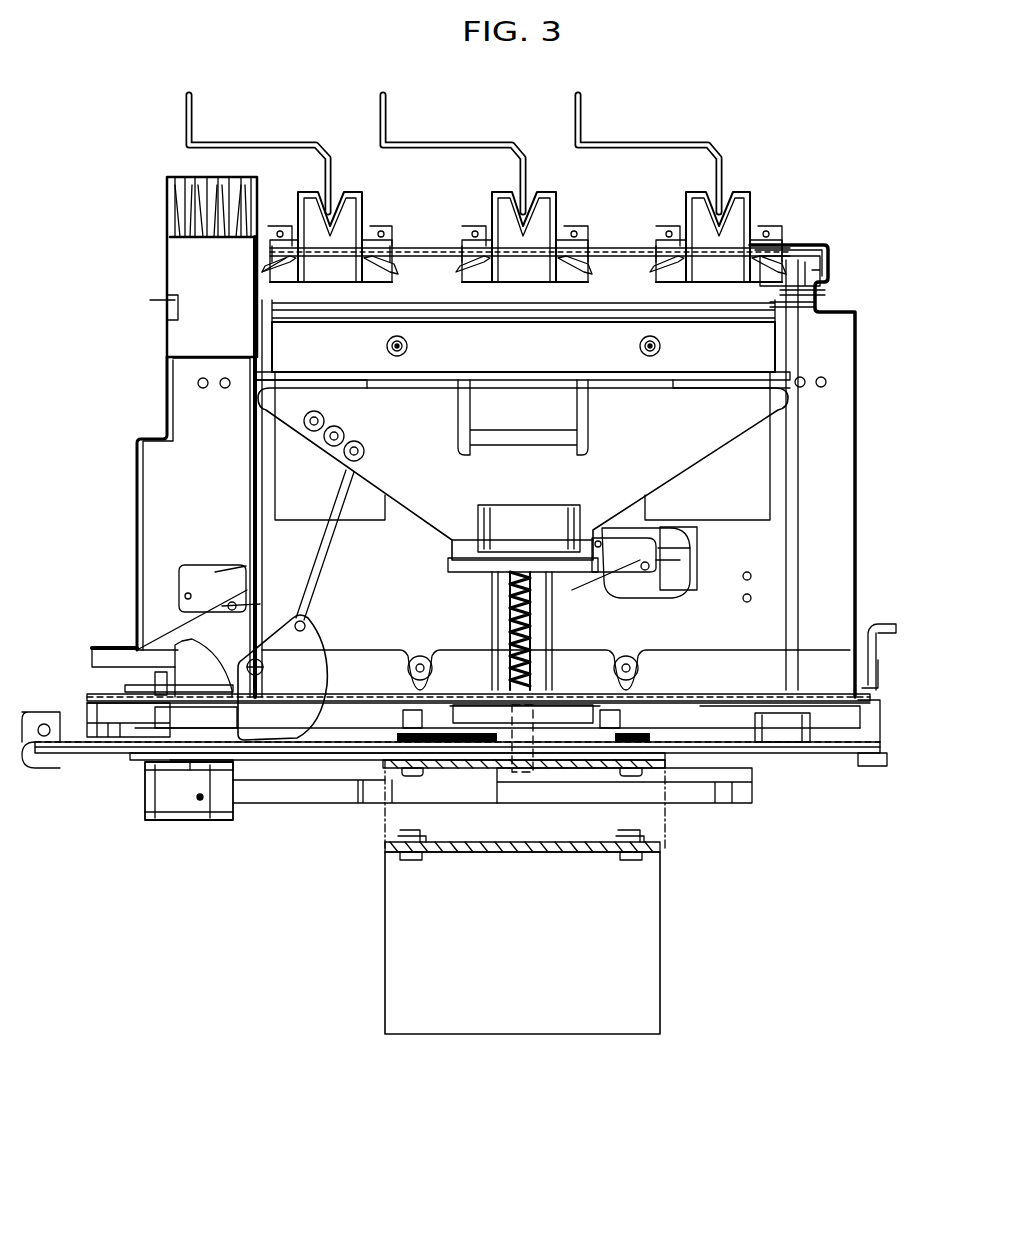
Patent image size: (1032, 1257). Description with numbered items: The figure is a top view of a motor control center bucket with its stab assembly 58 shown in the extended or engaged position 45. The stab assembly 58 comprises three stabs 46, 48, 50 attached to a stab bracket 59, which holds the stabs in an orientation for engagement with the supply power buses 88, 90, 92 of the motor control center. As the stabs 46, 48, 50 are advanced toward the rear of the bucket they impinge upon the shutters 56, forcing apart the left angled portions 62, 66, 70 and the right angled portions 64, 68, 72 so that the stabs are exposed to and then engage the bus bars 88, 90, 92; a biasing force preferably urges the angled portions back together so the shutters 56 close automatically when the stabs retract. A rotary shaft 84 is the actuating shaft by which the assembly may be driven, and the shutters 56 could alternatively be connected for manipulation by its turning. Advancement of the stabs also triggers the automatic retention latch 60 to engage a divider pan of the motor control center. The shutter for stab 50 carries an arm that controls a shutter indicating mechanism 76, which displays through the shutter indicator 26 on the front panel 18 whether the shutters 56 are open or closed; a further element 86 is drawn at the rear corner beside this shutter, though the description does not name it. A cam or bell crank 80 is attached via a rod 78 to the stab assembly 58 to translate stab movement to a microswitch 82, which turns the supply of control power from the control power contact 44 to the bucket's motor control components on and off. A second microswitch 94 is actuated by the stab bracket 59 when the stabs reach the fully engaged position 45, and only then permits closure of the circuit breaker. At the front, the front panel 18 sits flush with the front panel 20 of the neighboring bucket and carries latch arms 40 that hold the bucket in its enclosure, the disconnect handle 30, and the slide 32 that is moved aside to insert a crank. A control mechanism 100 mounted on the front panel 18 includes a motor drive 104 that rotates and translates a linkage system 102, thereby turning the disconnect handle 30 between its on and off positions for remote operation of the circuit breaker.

The front panel 18 is at (832, 755).
The front panel 20 is at (874, 760).
The shutter indicator 26 is at (782, 730).
The disconnect handle 30 is at (150, 798).
The slide 32 is at (670, 757).
The latch arms 40 is at (880, 625).
The control power contact 44 is at (158, 200).
The extended/engaged position 45 is at (544, 125).
The stab 46 is at (317, 276).
The stab 48 is at (509, 276).
The stab 50 is at (705, 276).
The shutters 56 is at (480, 262).
The stab assembly 58 is at (780, 337).
The stab bracket 59 is at (632, 442).
The automatic retention latch 60 is at (514, 538).
The left angled portion 62 is at (282, 265).
The right angled portion 64 is at (372, 258).
The left angled portion 66 is at (478, 262).
The right angled portion 68 is at (566, 258).
The left angled portion 70 is at (672, 262).
The right angled portion 72 is at (770, 262).
The shutter indicating mechanism 76 is at (798, 568).
The rod 78 is at (336, 572).
The cam or bell crank 80 is at (295, 700).
The microswitch 82 is at (210, 572).
The rotary shaft 84 is at (505, 614).
The cover 86 is at (840, 268).
The supply power bus 88 is at (258, 150).
The supply power bus 90 is at (444, 150).
The supply power bus 92 is at (650, 150).
The second microswitch 94 is at (632, 572).
The control mechanism 100 is at (660, 966).
The linkage system 102 is at (712, 830).
The motor drive 104 is at (480, 842).